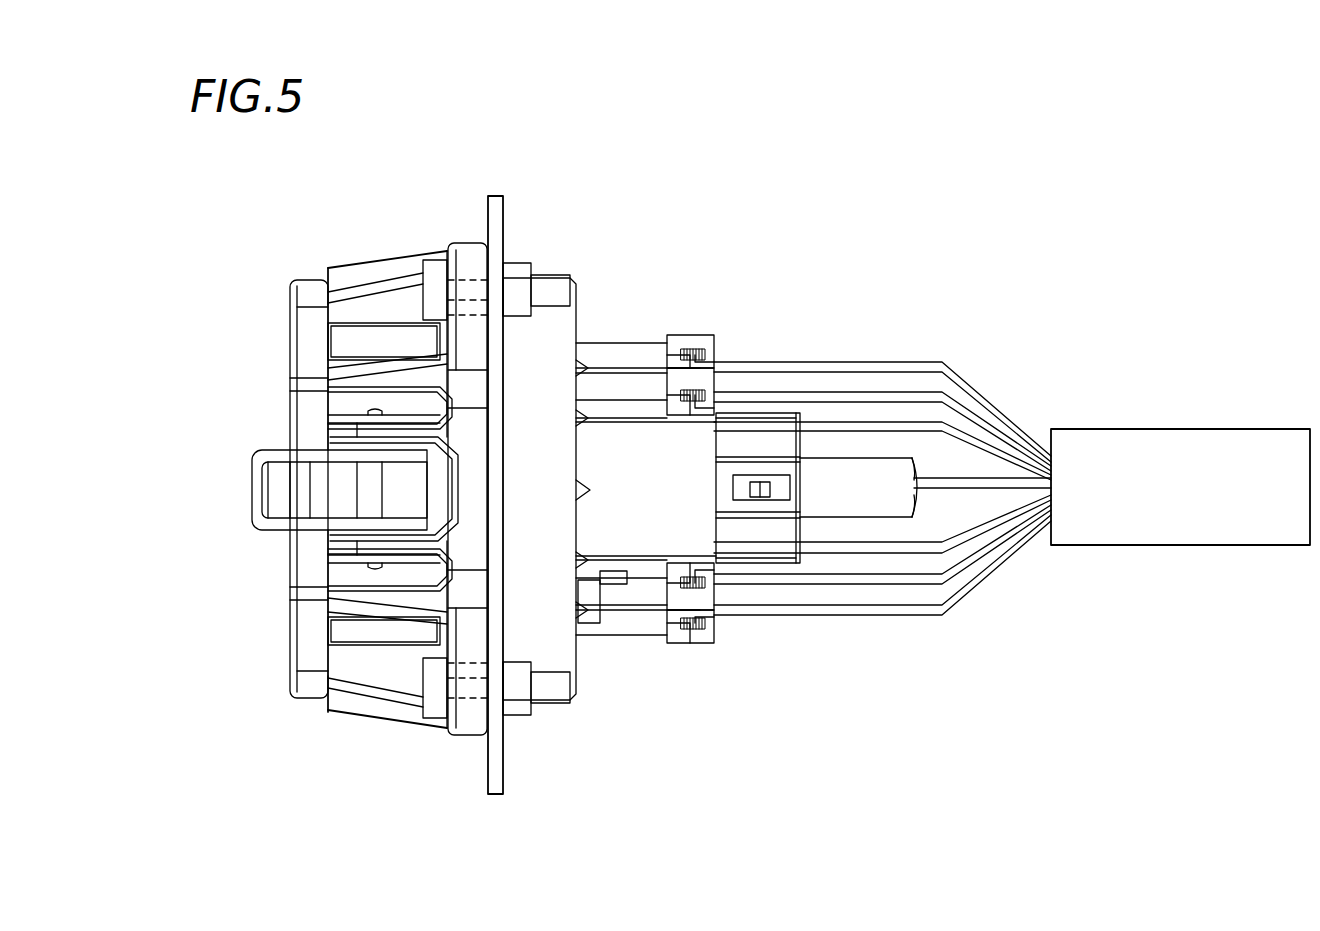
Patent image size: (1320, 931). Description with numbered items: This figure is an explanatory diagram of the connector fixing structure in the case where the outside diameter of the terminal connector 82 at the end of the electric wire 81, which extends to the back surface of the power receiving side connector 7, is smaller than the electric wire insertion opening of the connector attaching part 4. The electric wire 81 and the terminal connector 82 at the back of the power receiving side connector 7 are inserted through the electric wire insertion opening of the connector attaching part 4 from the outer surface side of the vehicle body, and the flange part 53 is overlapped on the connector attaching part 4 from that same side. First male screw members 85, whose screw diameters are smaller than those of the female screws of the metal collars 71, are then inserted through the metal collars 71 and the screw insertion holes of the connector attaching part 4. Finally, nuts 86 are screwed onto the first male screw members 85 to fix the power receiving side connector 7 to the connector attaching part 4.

The connector attaching part 4 is at (493, 196).
The power receiving side connector 7 is at (366, 262).
The flange part 53 is at (465, 554).
The metal collar 71 is at (470, 265).
The electric wire 81 is at (897, 362).
The terminal connector 82 is at (1180, 429).
The first male screw member 85 is at (433, 271).
The nut 86 is at (518, 273).